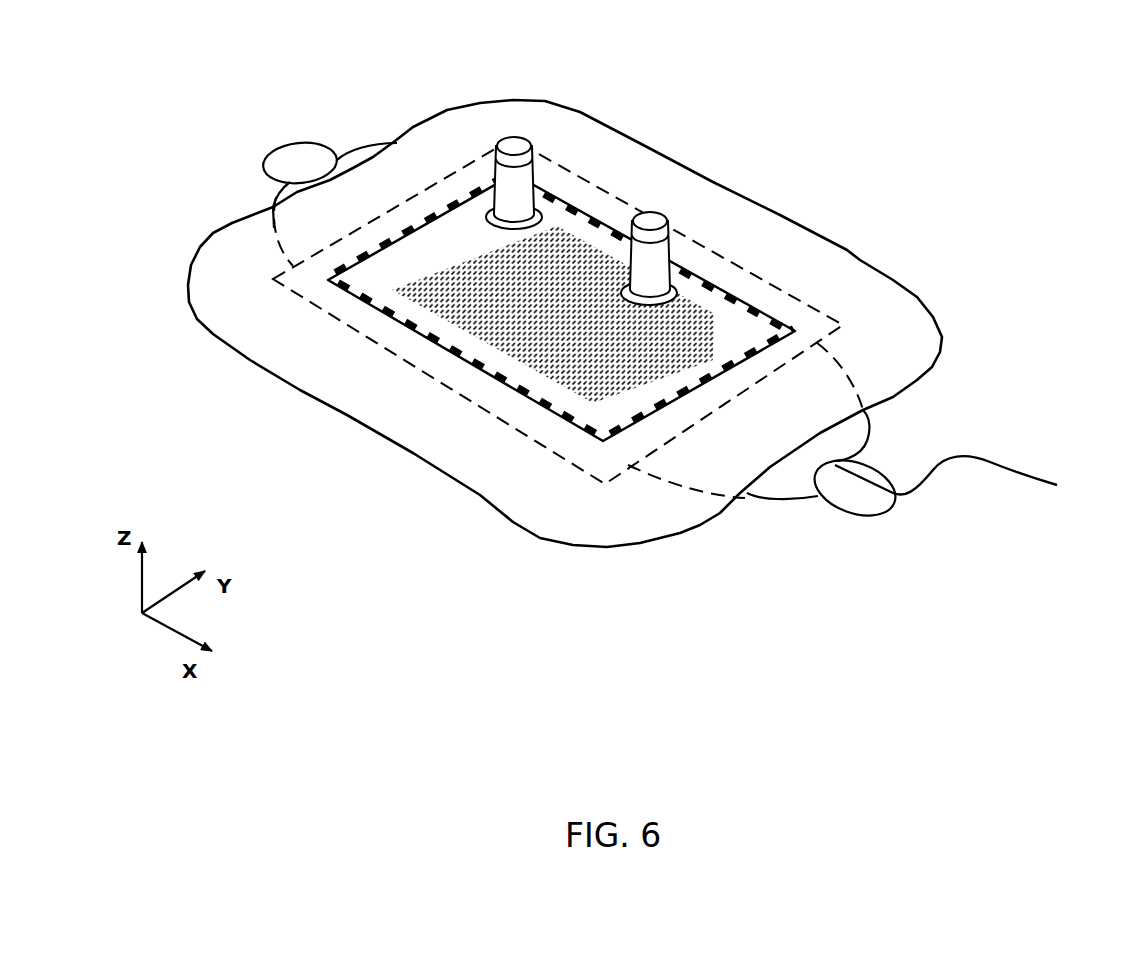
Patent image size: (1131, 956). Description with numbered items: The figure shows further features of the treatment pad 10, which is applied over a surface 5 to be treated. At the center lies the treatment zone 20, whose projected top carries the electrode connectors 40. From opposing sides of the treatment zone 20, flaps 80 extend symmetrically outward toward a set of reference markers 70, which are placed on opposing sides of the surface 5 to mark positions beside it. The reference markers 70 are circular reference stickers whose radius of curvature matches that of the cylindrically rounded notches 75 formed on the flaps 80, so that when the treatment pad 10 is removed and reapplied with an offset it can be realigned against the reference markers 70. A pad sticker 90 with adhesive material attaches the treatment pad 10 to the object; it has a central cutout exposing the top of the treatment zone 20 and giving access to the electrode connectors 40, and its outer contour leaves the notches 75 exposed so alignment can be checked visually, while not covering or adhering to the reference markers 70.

The treatment pad 10 is at (143, 92).
The treatment zone 20 is at (513, 397).
The surface to be treated 5 is at (683, 333).
The electrode connectors 40 is at (524, 187).
The reference markers 70 is at (307, 158).
The cylindrically rounded notches 75 is at (964, 481).
The flaps 80 is at (352, 167).
The pad sticker 90 is at (713, 205).